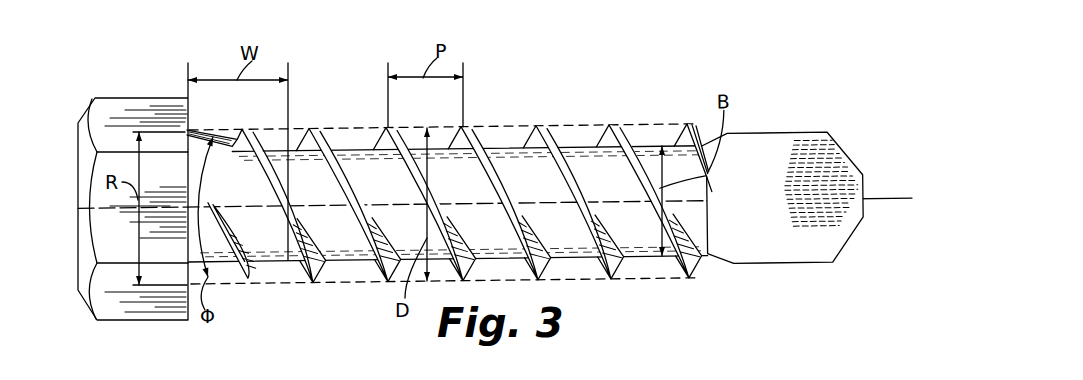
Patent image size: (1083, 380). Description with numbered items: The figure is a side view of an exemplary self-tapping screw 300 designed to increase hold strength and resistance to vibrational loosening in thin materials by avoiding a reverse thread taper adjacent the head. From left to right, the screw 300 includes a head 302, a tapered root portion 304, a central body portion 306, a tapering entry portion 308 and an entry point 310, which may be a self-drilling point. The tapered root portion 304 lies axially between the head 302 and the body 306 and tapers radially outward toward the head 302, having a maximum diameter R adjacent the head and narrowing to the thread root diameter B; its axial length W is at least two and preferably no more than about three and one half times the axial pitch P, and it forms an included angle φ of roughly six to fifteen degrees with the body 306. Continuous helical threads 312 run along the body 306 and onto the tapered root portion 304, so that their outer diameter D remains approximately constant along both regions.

The screw 300 is at (765, 45).
The head 302 is at (112, 120).
The tapered root portion 304 is at (243, 198).
The central body portion 306 is at (368, 175).
The tapering entry portion 308 is at (653, 145).
The entry point 310 is at (807, 165).
The threads 312 is at (625, 139).